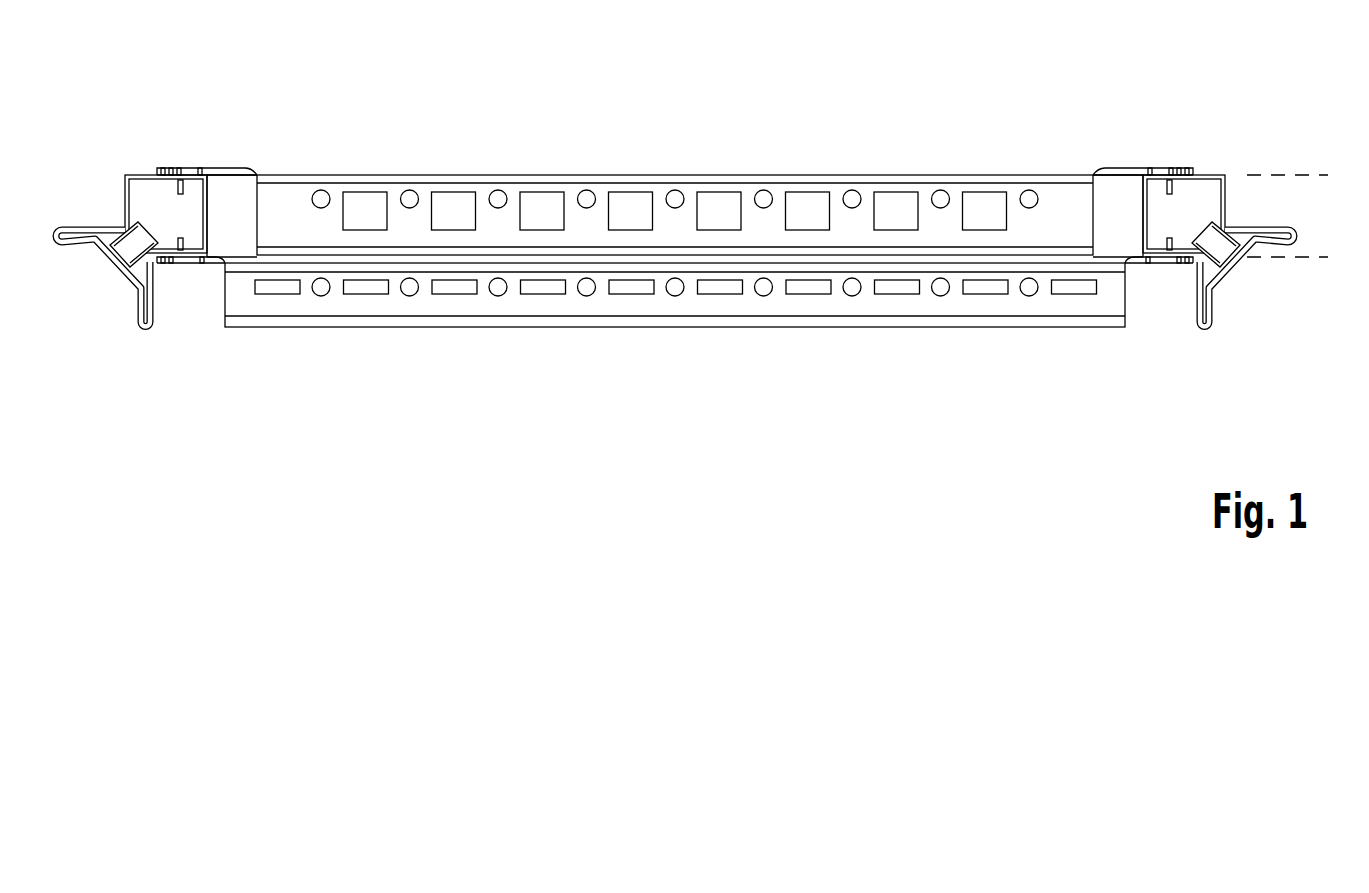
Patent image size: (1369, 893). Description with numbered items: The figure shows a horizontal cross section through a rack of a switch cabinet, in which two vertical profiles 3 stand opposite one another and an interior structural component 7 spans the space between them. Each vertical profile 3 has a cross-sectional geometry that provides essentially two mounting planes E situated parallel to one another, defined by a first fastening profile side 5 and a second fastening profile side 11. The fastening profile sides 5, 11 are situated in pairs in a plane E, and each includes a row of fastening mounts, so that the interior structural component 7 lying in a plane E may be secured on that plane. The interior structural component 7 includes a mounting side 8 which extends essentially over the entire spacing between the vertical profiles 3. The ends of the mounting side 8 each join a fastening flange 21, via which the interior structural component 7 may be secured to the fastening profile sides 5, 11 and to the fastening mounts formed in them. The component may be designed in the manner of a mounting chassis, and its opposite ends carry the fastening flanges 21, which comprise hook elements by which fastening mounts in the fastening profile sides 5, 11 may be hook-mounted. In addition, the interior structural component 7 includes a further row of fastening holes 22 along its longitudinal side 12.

The vertical profile 3 is at (671, 238).
The first fastening profile side 5 is at (675, 249).
The interior structural component 7 is at (600, 200).
The mounting side 8 is at (453, 168).
The second fastening profile side 11 is at (165, 264).
The longitudinal side 12 is at (992, 303).
The fastening flange 21 is at (675, 249).
The fastening holes 22 is at (720, 202).
The mounting plane E is at (1302, 216).